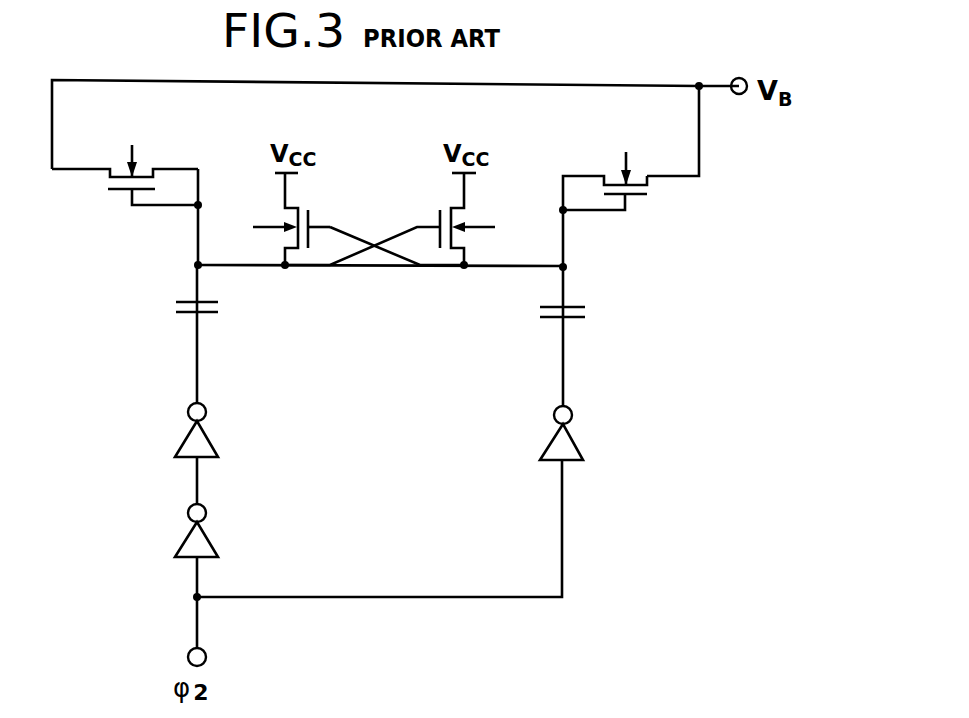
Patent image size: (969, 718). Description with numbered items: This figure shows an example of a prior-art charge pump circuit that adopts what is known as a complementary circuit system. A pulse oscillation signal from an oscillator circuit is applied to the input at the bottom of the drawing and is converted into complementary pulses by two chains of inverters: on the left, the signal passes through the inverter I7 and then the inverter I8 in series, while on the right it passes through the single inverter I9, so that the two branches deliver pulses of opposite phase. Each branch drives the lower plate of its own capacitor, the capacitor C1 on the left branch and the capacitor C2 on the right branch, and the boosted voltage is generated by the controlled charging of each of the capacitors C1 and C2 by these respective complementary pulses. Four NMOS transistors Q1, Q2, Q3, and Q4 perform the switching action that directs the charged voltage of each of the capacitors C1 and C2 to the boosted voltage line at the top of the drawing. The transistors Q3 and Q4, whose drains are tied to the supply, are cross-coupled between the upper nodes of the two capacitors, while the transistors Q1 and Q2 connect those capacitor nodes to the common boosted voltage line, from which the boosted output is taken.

The NMOS transistor Q1 is at (112, 184).
The NMOS transistor Q2 is at (641, 195).
The NMOS transistor Q3 is at (298, 198).
The NMOS transistor Q4 is at (462, 219).
The capacitor C1 is at (175, 304).
The capacitor C2 is at (590, 312).
The inverter I7 is at (181, 534).
The inverter I8 is at (184, 441).
The inverter I9 is at (577, 441).